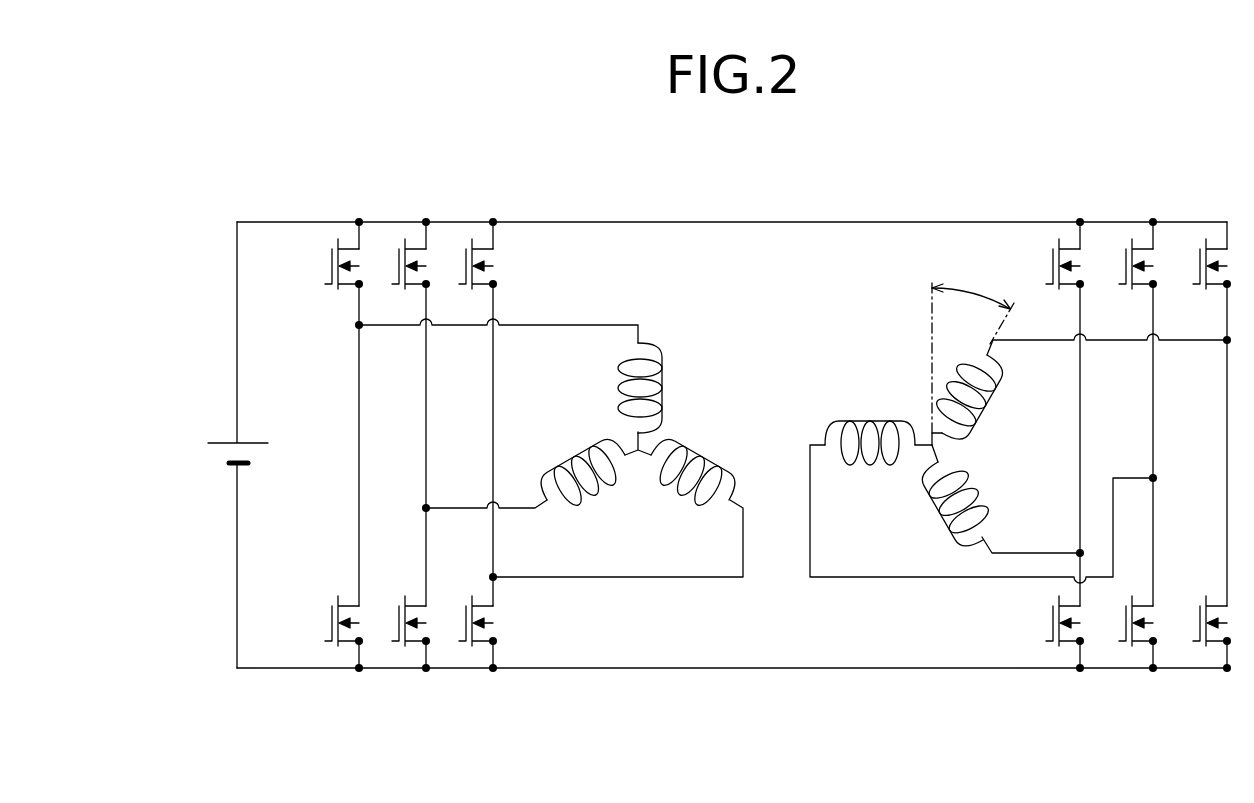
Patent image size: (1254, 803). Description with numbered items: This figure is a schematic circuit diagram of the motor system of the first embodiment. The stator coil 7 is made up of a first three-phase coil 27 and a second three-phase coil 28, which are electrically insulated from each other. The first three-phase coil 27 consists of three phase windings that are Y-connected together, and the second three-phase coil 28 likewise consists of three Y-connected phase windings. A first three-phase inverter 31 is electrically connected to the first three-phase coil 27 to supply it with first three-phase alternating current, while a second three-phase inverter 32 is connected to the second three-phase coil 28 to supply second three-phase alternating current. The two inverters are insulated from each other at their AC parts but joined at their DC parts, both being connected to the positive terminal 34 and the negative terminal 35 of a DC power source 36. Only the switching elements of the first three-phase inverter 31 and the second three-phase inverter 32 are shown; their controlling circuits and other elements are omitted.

The stator coil 7 is at (793, 367).
The first three-phase coil 27 is at (672, 333).
The second three-phase coil 28 is at (906, 330).
The first three-phase inverter 31 is at (467, 201).
The second three-phase inverter 32 is at (1209, 201).
The positive terminal 34 is at (293, 222).
The negative terminal 35 is at (290, 668).
The DC power source 36 is at (208, 450).